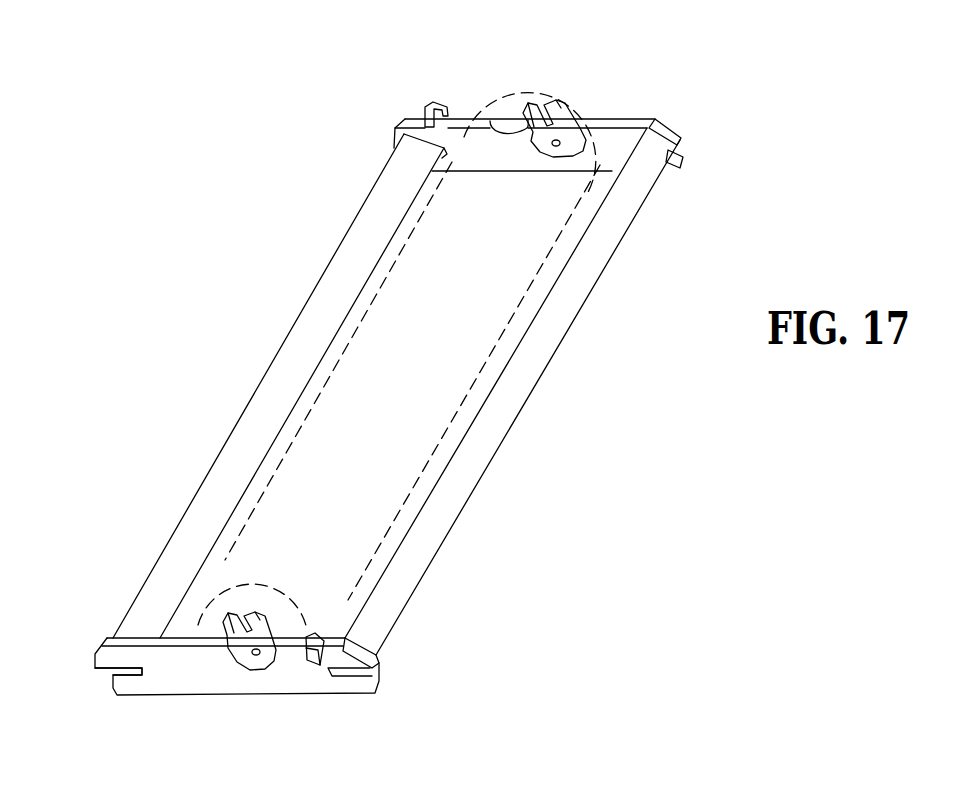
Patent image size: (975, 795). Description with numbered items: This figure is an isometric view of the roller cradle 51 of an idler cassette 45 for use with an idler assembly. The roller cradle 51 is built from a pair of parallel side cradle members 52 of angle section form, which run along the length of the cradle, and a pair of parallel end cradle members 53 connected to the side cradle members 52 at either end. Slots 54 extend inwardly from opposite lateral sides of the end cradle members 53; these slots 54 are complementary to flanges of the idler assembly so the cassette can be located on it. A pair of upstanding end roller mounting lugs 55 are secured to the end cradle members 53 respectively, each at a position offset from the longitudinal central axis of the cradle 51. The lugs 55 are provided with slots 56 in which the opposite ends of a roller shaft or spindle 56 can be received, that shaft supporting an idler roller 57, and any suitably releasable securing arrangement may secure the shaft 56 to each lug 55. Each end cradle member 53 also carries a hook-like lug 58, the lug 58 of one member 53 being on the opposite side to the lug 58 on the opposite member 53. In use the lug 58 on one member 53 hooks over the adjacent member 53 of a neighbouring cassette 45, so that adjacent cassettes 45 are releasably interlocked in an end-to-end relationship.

The idler cassette 45 is at (222, 218).
The roller cradle 51 is at (552, 415).
The side cradle members 52 is at (239, 416).
The end cradle members 53 is at (617, 118).
The slots 54 is at (113, 676).
The end roller mounting lugs 55 is at (563, 107).
The slots / roller shaft 56 is at (240, 618).
The idler roller 57 is at (412, 238).
The hook-like lug 58 is at (445, 102).